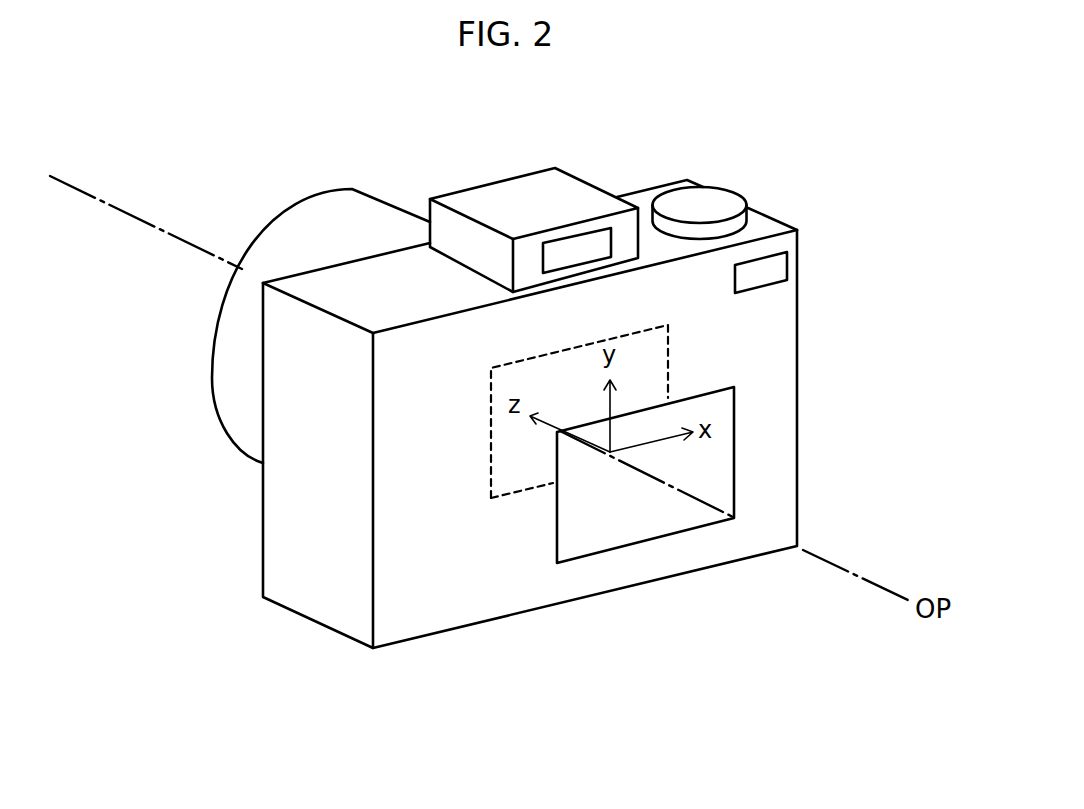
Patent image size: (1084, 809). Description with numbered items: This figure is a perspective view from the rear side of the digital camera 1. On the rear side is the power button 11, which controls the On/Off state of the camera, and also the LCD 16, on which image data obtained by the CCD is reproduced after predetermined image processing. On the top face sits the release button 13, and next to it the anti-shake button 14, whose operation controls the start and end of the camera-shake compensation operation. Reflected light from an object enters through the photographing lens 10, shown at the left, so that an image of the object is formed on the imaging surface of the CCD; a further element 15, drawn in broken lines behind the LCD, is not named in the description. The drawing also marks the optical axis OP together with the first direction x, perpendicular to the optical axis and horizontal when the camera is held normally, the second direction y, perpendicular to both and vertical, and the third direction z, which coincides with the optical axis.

The digital camera 1 is at (663, 181).
The photographing lens 10 is at (380, 195).
The power button 11 is at (787, 263).
The release button 13 is at (719, 200).
The anti-shake button 14 is at (593, 237).
The imaging element (virtual plane) 15 is at (668, 358).
The LCD 16 is at (734, 452).